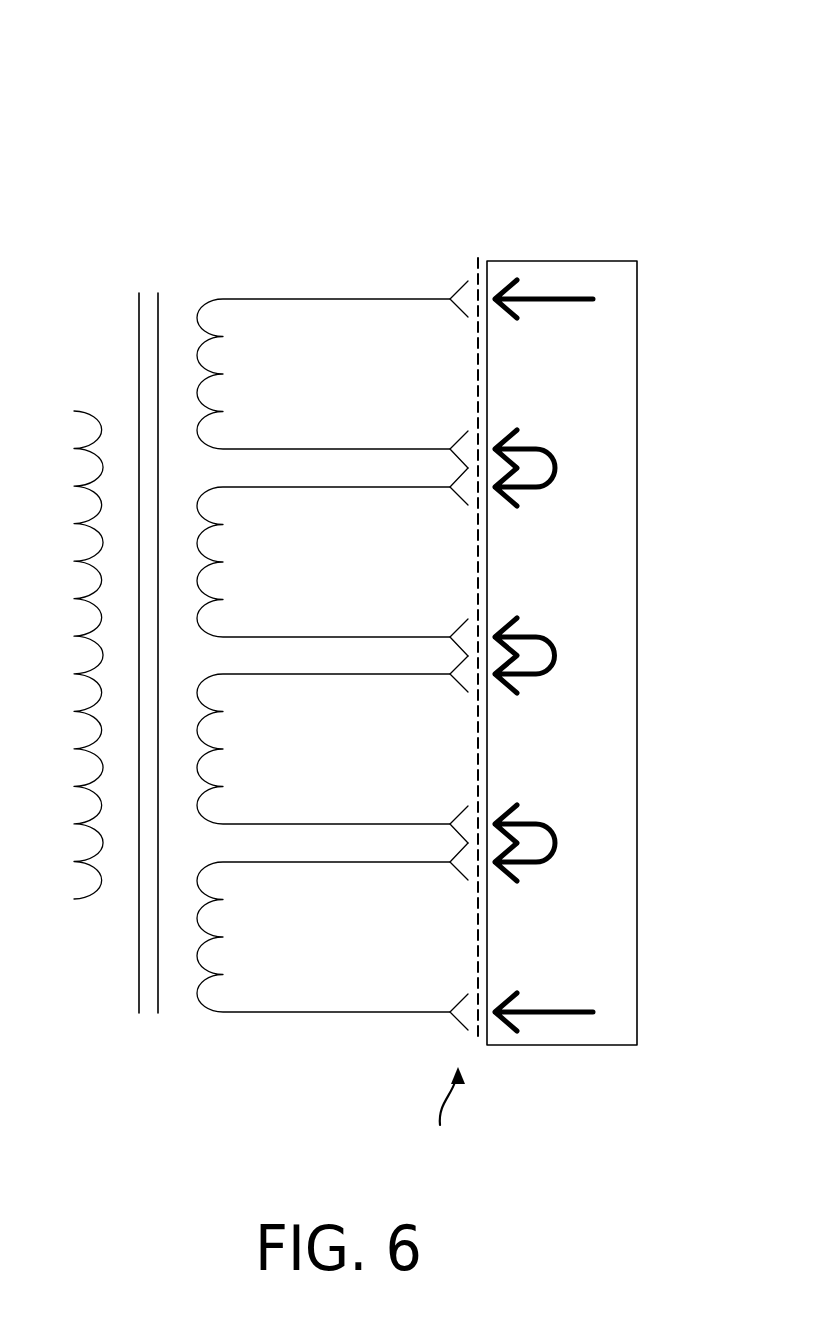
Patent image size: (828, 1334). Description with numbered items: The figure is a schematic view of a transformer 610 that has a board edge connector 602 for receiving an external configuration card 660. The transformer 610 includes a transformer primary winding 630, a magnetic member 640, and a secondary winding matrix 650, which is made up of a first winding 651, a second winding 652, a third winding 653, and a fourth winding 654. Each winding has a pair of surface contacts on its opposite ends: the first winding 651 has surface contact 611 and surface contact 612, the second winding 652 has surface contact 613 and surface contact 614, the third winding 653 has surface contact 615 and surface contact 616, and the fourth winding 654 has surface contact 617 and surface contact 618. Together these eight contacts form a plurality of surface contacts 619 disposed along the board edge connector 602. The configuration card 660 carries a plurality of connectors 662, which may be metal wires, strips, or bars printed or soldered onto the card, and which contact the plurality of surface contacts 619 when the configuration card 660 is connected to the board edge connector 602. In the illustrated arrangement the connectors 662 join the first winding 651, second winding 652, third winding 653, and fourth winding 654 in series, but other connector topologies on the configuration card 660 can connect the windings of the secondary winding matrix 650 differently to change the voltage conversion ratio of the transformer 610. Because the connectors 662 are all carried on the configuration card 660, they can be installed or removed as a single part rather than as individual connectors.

The transformer 610 is at (226, 84).
The transformer primary winding 630 is at (110, 245).
The magnetic member 640 is at (183, 245).
The secondary winding matrix 650 is at (473, 247).
The first winding 651 is at (217, 337).
The second winding 652 is at (217, 525).
The third winding 653 is at (217, 712).
The fourth winding 654 is at (217, 899).
The surface contact 611 is at (465, 314).
The surface contact 612 is at (462, 437).
The surface contact 613 is at (464, 504).
The surface contact 614 is at (463, 626).
The surface contact 615 is at (463, 690).
The surface contact 616 is at (463, 814).
The surface contact 617 is at (463, 878).
The surface contact 618 is at (463, 999).
The board edge connector 602 is at (484, 256).
The plurality of surface contacts 619 is at (450, 1112).
The configuration card 660 is at (617, 340).
The connectors 662 is at (576, 301).